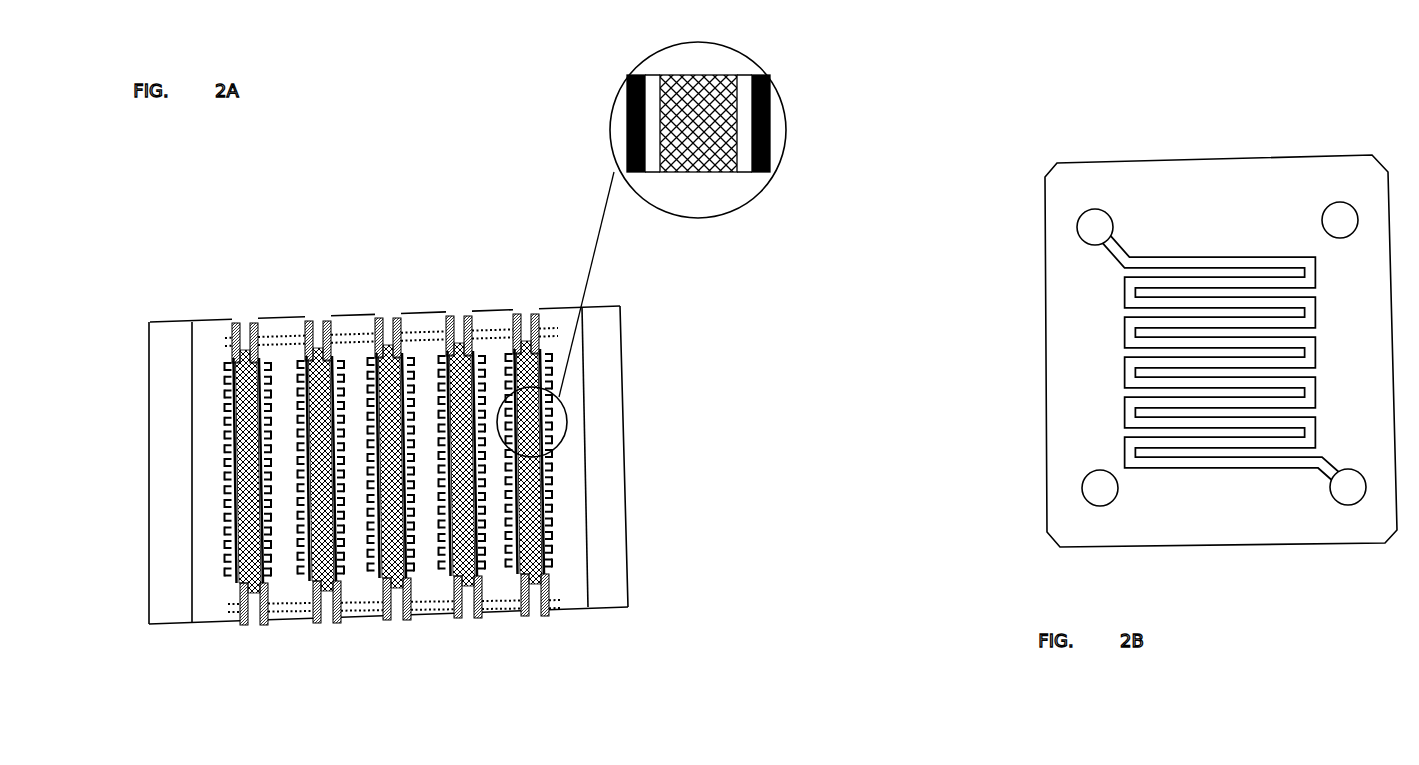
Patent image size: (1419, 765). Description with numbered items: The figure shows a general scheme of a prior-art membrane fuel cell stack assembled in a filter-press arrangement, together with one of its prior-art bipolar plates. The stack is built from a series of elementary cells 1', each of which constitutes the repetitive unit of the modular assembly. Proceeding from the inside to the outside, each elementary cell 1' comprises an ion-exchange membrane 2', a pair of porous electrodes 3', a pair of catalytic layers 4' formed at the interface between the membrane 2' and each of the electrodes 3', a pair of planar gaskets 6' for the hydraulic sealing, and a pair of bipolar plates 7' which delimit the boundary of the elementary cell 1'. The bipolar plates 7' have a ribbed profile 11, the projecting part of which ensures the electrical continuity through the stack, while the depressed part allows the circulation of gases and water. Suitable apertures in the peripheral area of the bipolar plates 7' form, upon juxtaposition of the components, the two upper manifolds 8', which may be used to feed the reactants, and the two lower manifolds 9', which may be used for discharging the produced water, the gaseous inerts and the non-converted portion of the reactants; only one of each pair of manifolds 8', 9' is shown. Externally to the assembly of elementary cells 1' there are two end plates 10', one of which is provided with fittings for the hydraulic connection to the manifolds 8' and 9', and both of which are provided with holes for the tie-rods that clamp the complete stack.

In FIG. 2A, the elementary cell 1' is at (391, 509).
In FIG. 2A, the ion-exchange membrane 2' is at (482, 334).
In FIG. 2A, the porous electrodes 3' is at (699, 161).
In FIG. 2A, the catalytic layers 4' is at (698, 176).
In FIG. 2A, the planar gaskets 6' is at (386, 428).
In FIG. 2A, the bipolar plates 7' is at (384, 421).
In FIG. 2B, the bipolar plates 7' is at (1181, 351).
In FIG. 2A, the upper manifolds 8' is at (391, 268).
In FIG. 2A, the lower manifolds 9' is at (395, 627).
In FIG. 2A, the end plates 10' is at (373, 463).
In FIG. 2B, the ribbed profile 11 is at (1165, 428).